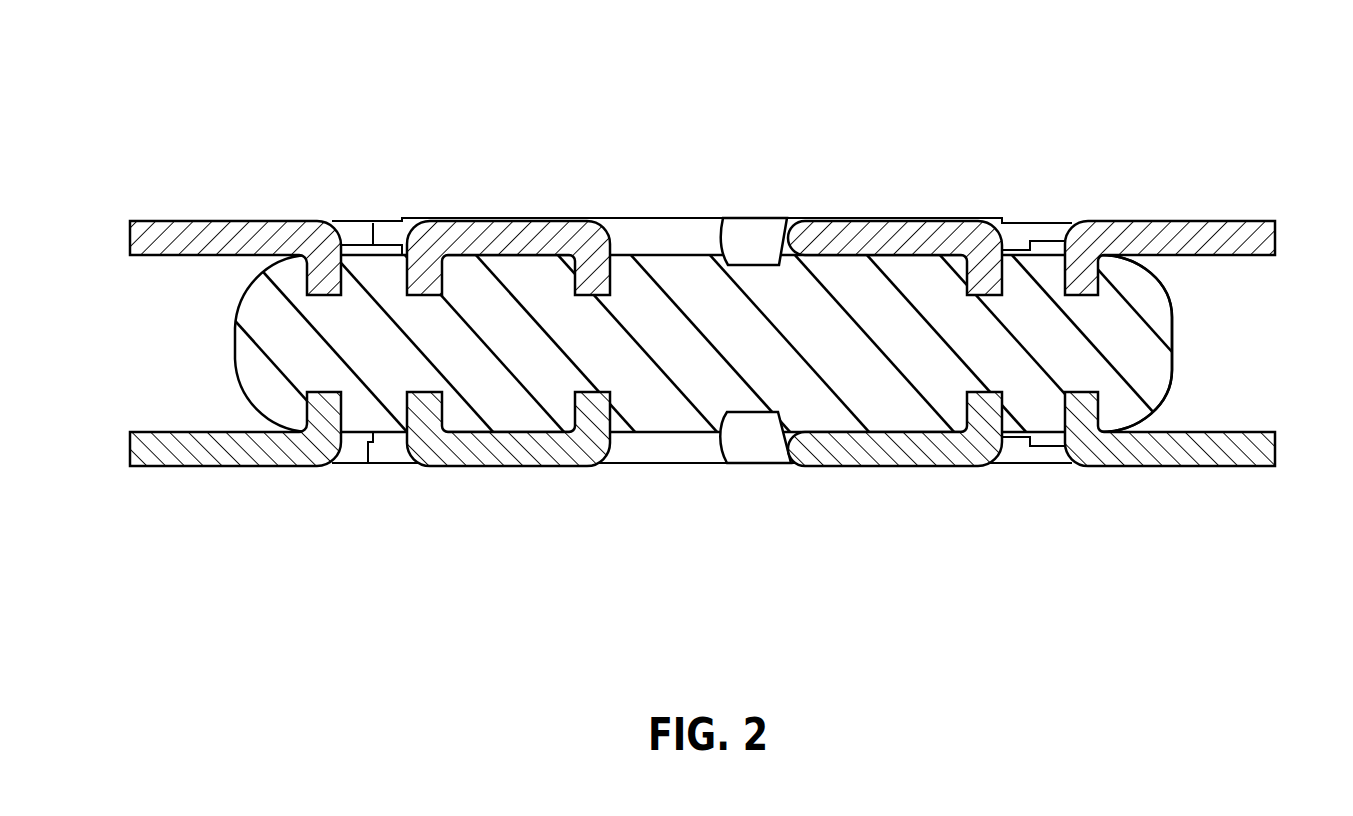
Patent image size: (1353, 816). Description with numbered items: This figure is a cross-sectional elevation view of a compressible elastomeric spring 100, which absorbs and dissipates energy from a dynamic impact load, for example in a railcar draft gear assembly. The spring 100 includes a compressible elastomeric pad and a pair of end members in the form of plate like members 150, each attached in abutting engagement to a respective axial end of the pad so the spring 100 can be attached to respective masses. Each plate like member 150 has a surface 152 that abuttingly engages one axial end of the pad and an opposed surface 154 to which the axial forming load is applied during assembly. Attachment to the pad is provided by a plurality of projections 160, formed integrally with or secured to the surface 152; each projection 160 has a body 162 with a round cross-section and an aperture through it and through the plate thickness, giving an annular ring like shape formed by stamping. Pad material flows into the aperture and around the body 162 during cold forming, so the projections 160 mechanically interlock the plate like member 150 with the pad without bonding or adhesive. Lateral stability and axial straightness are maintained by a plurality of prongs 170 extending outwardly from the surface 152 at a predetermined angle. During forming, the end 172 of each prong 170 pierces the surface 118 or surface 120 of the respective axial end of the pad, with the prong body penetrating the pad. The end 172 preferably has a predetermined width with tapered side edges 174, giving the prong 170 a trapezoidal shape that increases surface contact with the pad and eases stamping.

The compressible elastomeric spring 100 is at (728, 325).
The surface of axial end 118 is at (920, 433).
The surface of axial end 120 is at (925, 228).
The plate like member 150 is at (1233, 122).
The surface of plate like member 152 is at (1236, 431).
The opposed surface of plate like member 154 is at (1140, 221).
The projection 160 is at (303, 262).
The body of projection 162 is at (402, 272).
The prong 170 is at (750, 250).
The end of prong 172 is at (760, 412).
The side edges of prong 174 is at (797, 268).